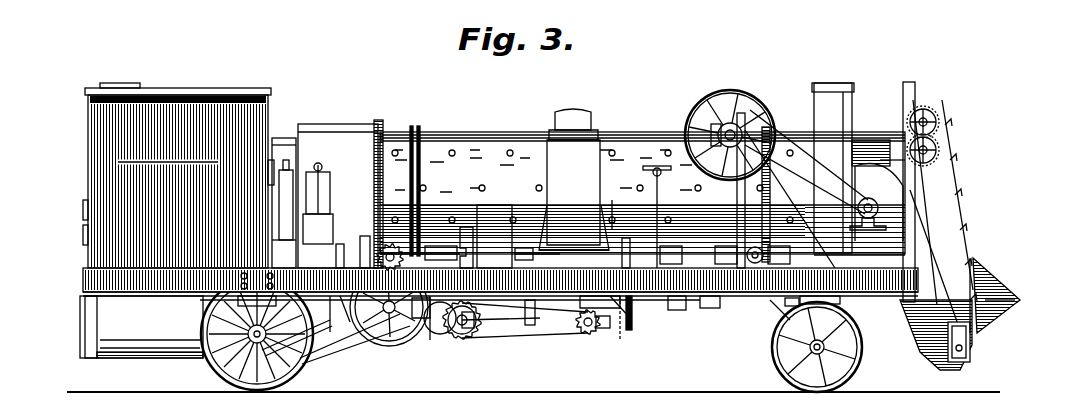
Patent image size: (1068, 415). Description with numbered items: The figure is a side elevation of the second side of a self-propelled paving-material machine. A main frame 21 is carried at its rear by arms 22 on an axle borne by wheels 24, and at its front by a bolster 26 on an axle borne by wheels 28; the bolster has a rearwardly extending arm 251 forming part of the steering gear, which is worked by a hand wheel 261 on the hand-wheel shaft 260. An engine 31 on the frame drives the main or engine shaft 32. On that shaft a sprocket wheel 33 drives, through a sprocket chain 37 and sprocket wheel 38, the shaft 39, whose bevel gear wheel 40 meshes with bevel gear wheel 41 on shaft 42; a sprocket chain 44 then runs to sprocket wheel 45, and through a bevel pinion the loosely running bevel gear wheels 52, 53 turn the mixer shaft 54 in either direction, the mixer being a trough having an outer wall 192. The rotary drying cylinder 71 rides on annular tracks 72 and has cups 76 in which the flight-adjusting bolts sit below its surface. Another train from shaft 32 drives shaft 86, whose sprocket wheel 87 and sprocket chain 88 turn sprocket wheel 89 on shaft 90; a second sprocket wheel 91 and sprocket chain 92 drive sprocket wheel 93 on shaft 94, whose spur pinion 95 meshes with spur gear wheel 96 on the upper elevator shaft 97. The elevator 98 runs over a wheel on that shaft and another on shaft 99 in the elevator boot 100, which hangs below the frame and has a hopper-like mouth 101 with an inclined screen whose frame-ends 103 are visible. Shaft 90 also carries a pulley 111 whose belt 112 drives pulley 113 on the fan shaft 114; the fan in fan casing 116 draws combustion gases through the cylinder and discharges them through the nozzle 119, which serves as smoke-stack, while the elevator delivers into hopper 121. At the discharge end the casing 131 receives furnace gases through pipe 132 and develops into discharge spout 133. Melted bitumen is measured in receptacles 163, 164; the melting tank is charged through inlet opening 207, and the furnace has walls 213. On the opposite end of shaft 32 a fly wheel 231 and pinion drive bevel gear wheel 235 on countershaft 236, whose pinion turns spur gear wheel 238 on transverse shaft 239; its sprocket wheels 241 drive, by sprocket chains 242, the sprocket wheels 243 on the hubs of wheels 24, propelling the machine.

The main frame 21 is at (83, 282).
The arms 22 is at (257, 297).
The wheels 24 is at (210, 364).
The bolster 26 is at (810, 322).
The wheels 28 is at (858, 366).
The engine 31 is at (574, 179).
The main or engine shaft 32 is at (690, 310).
The sprocket wheel 33 is at (624, 240).
The sprocket chain 37 is at (634, 313).
The sprocket wheel 38 is at (628, 346).
The shaft 39 is at (632, 329).
The bevel gear wheel 40 is at (600, 331).
The bevel gear wheel 41 is at (540, 336).
The shaft 42 is at (588, 335).
The sprocket chain 44 is at (520, 341).
The sprocket wheel 45 is at (505, 336).
The bevel gear wheel 52 is at (454, 346).
The bevel gear wheel 53 is at (450, 336).
The shaft 54 is at (480, 319).
The rotary drying cylinder 71 is at (513, 132).
The annular tracks 72 is at (416, 130).
The cup 76 is at (536, 186).
The shaft 86 is at (756, 296).
The sprocket wheel 87 is at (728, 296).
The sprocket chain 88 is at (657, 209).
The sprocket wheel 89 is at (708, 106).
The shaft 90 is at (742, 113).
The sprocket wheel 91 is at (712, 141).
The sprocket chain 92 is at (803, 132).
The sprocket wheel 93 is at (937, 165).
The shaft 94 is at (940, 148).
The spur pinion 95 is at (940, 153).
The spur gear wheel 96 is at (930, 111).
The upper elevator shaft 97 is at (938, 116).
The elevator 98 is at (960, 201).
The shaft 99 is at (972, 356).
The elevator boot 100 is at (928, 339).
The hopper-like mouth 101 is at (990, 277).
The screen-supporting frame-ends 103 is at (1005, 299).
The pulley 111 is at (718, 130).
The belt 112 is at (773, 128).
The pulley 113 is at (882, 204).
The fan shaft 114 is at (860, 216).
The fan casing 116 is at (859, 207).
The nozzle 119 is at (852, 98).
The hopper 121 is at (870, 140).
The casing 131 is at (333, 124).
The pipe 132 is at (284, 138).
The discharge spout 133 is at (340, 252).
The measuring receptacle 163 is at (280, 238).
The measuring receptacle 164 is at (320, 227).
The outer wall 192 is at (127, 360).
The inlet opening 207 is at (132, 83).
The side and end walls 213 is at (178, 178).
The fly wheel 231 is at (470, 236).
The bevel gear wheel 235 is at (380, 247).
The countershaft 236 is at (310, 331).
The spur gear wheel 238 is at (418, 345).
The shaft 239 is at (395, 338).
The sprocket wheels 241 is at (370, 324).
The sprocket chains 242 is at (358, 353).
The sprocket wheels 243 is at (296, 364).
The arm 251 is at (786, 313).
The hand-wheel shaft 260 is at (656, 194).
The hand wheel 261 is at (670, 197).